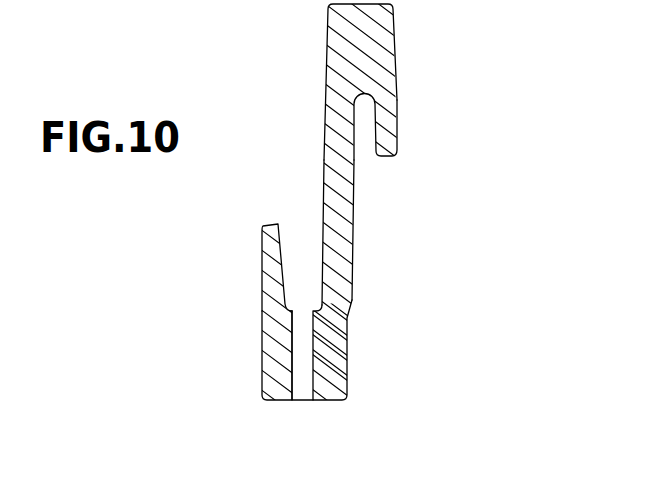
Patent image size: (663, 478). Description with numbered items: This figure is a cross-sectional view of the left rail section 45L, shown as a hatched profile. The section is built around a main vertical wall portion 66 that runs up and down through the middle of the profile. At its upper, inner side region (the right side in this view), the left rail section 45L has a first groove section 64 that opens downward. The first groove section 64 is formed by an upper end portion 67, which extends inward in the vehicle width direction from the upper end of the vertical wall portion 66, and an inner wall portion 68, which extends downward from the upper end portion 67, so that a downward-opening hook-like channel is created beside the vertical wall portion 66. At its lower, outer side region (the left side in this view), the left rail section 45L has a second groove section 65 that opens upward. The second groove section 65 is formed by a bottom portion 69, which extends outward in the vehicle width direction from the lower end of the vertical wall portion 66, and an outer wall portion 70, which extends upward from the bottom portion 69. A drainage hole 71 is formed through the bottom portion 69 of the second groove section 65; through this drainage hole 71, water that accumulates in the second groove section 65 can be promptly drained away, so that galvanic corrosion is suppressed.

The left rail section 45L is at (311, 115).
The first groove section 64 is at (412, 78).
The upper end portion 67 is at (360, 62).
The inner wall portion 68 is at (388, 118).
The vertical wall portion 66 is at (345, 232).
The bottom portion 69 is at (333, 345).
The second groove section 65 is at (254, 303).
The outer wall portion 70 is at (264, 257).
The drainage hole 71 is at (293, 383).